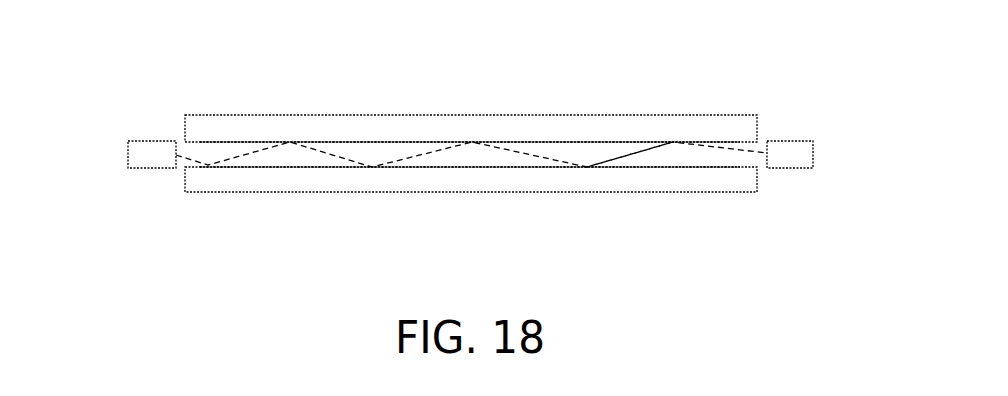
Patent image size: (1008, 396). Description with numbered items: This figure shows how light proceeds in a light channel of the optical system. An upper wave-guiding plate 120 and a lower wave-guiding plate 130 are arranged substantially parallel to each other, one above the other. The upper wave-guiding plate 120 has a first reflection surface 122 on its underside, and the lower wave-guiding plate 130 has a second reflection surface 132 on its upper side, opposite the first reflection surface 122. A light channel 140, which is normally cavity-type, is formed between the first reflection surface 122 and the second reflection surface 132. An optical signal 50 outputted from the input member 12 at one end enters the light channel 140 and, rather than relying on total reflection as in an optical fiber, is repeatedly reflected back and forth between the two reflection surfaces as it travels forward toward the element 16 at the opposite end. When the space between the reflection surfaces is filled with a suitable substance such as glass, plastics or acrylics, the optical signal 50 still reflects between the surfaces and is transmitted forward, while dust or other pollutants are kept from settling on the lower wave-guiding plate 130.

The input member 12 is at (813, 153).
The light source 16 is at (128, 153).
The optical signal 50 is at (630, 153).
The upper wave-guiding plate 120 is at (508, 115).
The first reflection surface 122 is at (342, 142).
The lower wave-guiding plate 130 is at (668, 192).
The second reflection surface 132 is at (333, 167).
The light channel 140 is at (485, 155).